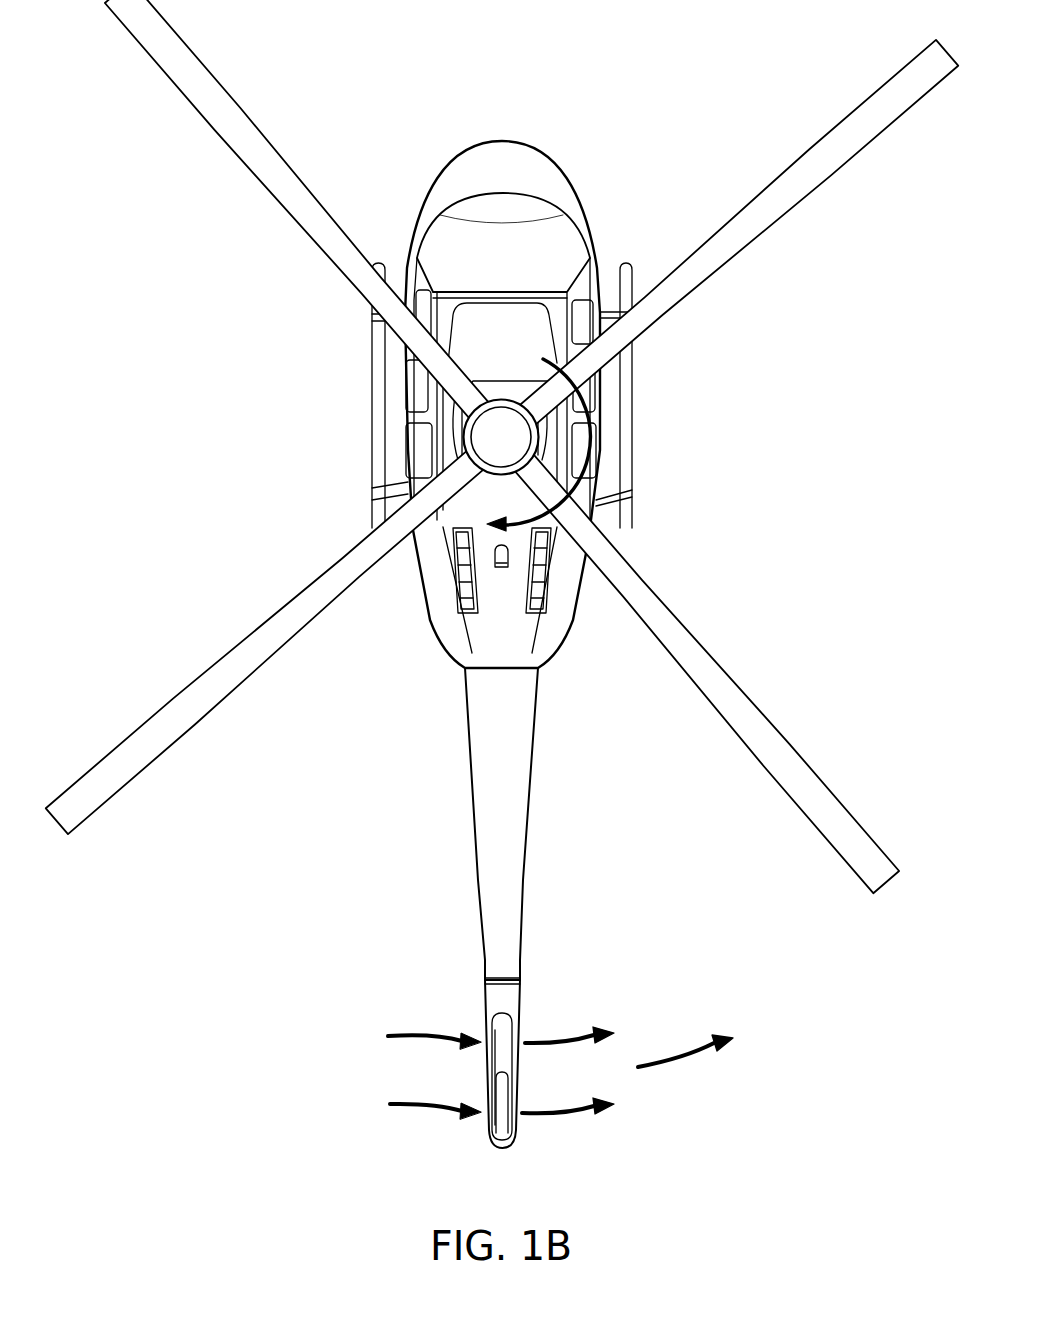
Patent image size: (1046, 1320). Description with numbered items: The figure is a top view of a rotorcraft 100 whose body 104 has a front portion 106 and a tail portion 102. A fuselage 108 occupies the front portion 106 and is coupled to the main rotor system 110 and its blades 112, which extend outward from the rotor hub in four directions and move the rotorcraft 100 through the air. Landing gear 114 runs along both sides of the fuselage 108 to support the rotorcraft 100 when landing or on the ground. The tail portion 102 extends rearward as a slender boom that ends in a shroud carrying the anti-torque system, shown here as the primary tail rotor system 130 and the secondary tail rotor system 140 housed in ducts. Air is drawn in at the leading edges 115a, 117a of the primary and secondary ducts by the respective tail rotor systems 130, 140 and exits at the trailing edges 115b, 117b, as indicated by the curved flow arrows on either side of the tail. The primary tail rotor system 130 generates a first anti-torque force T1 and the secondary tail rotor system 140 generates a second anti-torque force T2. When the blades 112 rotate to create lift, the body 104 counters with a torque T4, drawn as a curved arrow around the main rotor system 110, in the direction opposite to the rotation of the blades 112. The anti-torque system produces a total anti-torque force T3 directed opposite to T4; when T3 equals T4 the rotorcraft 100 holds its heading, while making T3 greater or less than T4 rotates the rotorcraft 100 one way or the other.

The rotorcraft 100 is at (452, 639).
The tail portion 102 is at (453, 880).
The body 104 is at (430, 612).
The front portion 106 is at (480, 145).
The fuselage 108 is at (575, 183).
The main rotor system 110 is at (506, 400).
The blades 112 is at (212, 72).
The landing gear 114 is at (632, 383).
The primary tail rotor system 130 is at (483, 1008).
The leading edge of primary duct 115a is at (482, 1062).
The trailing edge of primary duct 115b is at (518, 1062).
The leading edge of secondary duct 117a is at (482, 1122).
The trailing edge of secondary duct 117b is at (522, 1128).
The secondary tail rotor system 140 is at (498, 1085).
The first anti-torque force T1 is at (557, 1033).
The second anti-torque force T2 is at (573, 1119).
The total anti-torque force T3 is at (682, 1070).
The torque T4 is at (600, 470).